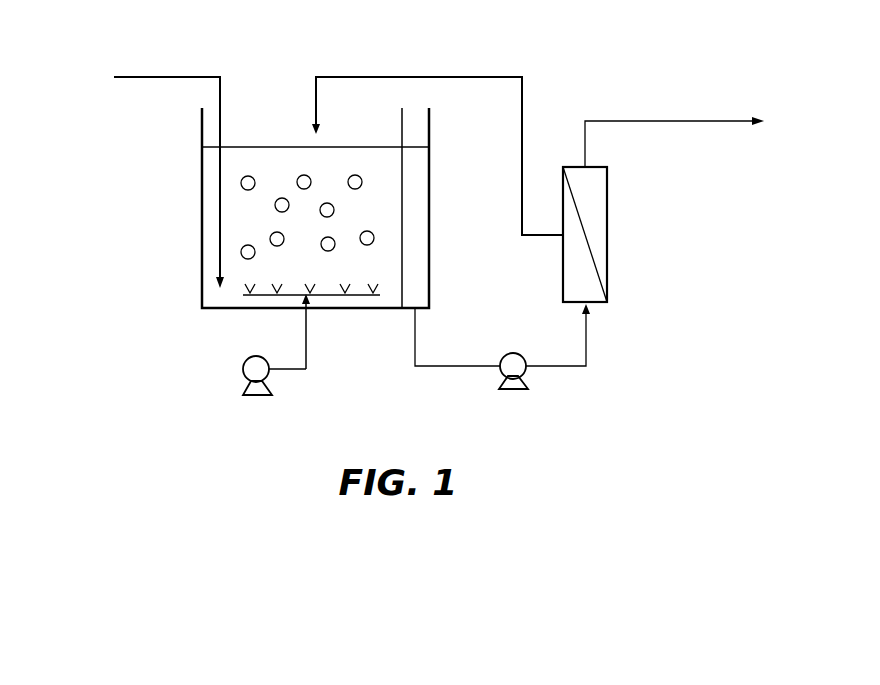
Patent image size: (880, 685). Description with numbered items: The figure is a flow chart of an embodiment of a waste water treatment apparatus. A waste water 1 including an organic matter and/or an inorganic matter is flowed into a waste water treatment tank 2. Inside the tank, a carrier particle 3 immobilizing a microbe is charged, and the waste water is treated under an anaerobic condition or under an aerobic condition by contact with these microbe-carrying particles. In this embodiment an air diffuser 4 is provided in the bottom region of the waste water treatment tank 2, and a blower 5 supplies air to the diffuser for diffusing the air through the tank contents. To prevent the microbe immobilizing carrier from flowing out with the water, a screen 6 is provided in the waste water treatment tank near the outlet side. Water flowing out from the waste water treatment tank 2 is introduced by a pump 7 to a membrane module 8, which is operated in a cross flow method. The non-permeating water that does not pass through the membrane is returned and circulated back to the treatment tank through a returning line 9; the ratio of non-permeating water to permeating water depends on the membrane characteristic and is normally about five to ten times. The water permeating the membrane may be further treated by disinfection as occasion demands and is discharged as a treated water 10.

The waste water 1 is at (165, 76).
The waste water treatment tank 2 is at (248, 174).
The carrier particle 3 is at (354, 174).
The air diffuser 4 is at (347, 300).
The blower 5 is at (243, 370).
The screen 6 is at (403, 130).
The pump 7 is at (524, 377).
The membrane module 8 is at (598, 235).
The returning line 9 is at (411, 76).
The treated water 10 is at (665, 120).